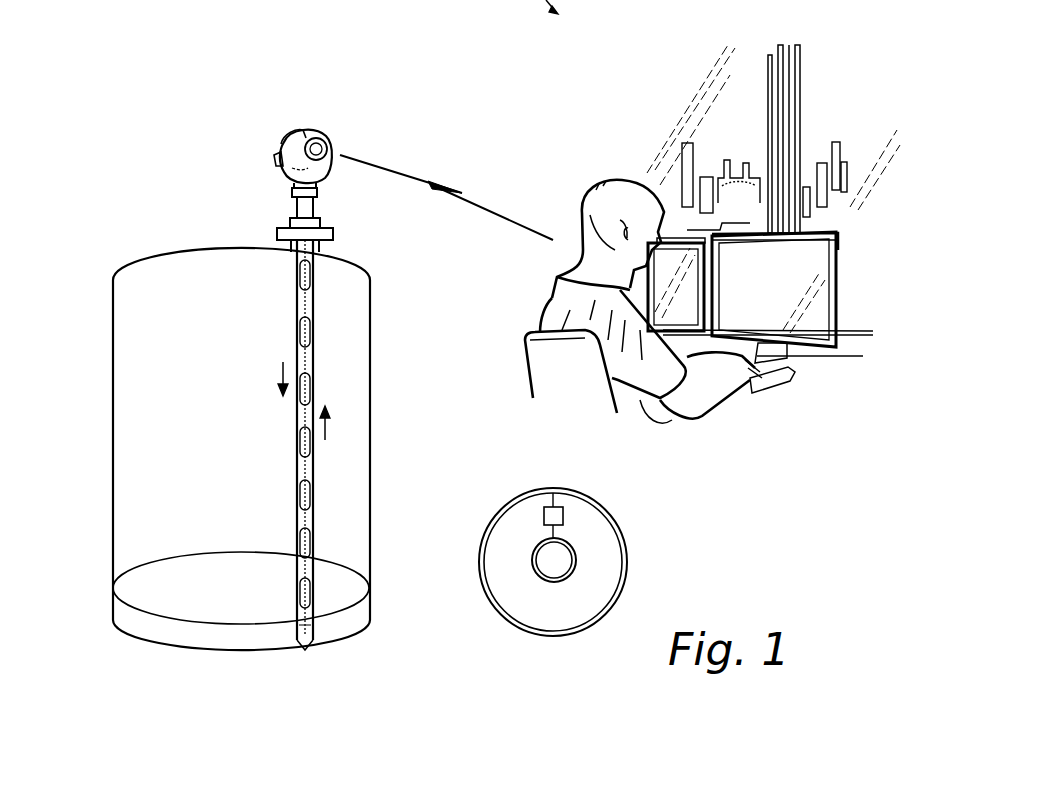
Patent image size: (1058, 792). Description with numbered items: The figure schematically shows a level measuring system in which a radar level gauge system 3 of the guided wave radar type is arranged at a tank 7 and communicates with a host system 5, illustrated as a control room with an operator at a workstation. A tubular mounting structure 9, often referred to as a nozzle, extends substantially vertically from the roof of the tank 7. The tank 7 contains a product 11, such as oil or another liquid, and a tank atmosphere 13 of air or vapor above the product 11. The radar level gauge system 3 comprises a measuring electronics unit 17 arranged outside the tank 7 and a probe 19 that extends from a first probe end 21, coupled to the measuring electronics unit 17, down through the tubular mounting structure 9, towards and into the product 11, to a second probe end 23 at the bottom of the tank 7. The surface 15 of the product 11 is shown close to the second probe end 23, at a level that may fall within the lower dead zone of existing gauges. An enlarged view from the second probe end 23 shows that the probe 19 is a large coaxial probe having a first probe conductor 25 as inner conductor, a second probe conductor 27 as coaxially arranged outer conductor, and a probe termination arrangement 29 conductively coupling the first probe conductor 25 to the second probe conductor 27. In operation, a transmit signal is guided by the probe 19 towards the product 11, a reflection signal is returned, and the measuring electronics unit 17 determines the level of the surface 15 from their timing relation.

The radar level gauge system 3 is at (268, 97).
The host system 5 is at (824, 106).
The tank 7 is at (112, 388).
The tubular mounting structure 9 is at (320, 249).
The product 11 is at (185, 632).
The tank atmosphere 13 is at (238, 310).
The surface 15 is at (148, 592).
The measuring electronics unit 17 is at (303, 130).
The probe 19 is at (308, 357).
The first probe end 21 is at (283, 228).
The second probe end 23 is at (305, 646).
The first probe conductor 25 is at (532, 562).
The second probe conductor 27 is at (500, 612).
The probe termination arrangement 29 is at (563, 515).